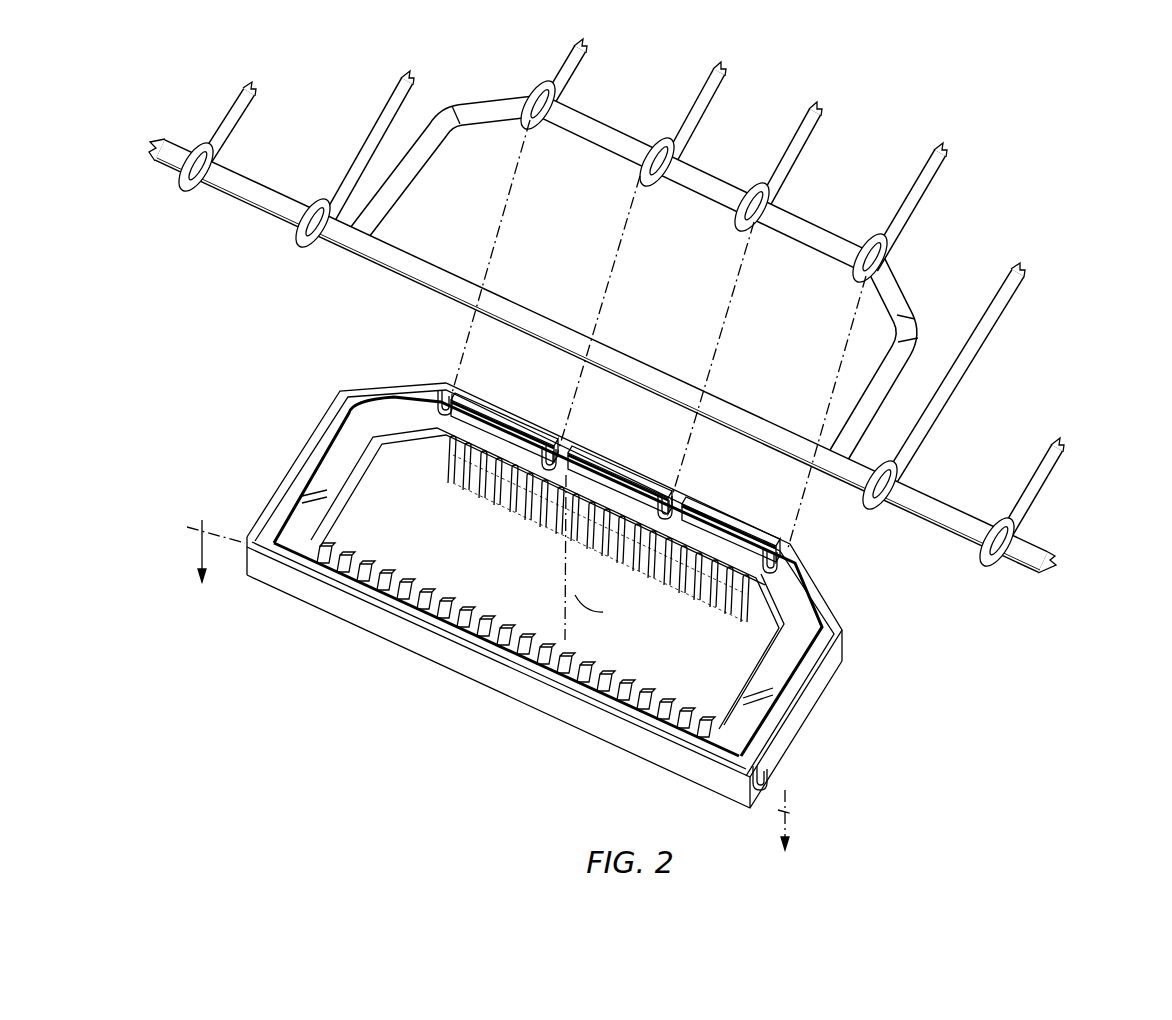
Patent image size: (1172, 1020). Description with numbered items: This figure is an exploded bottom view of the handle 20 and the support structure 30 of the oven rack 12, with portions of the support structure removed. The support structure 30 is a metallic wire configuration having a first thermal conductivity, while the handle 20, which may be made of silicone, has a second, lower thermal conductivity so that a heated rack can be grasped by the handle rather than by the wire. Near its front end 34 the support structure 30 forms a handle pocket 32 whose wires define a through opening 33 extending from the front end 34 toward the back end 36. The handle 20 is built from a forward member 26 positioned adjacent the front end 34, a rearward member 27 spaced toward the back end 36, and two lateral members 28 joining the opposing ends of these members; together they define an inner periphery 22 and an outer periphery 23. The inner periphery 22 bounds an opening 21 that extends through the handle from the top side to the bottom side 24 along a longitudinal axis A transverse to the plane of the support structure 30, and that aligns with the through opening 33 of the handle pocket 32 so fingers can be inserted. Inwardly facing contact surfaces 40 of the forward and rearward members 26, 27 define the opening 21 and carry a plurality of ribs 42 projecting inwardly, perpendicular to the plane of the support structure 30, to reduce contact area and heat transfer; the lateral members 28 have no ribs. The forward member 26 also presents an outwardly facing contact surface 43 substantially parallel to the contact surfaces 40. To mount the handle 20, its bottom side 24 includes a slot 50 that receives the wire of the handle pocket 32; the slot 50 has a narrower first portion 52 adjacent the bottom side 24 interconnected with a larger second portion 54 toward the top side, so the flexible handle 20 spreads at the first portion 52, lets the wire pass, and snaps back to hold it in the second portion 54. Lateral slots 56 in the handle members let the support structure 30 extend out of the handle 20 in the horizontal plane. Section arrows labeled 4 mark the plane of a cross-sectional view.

The oven rack 12 is at (656, 458).
The handle 20 is at (574, 623).
The opening 21 is at (463, 640).
The inner periphery 22 is at (385, 588).
The outer periphery 23 is at (270, 486).
The bottom side 24 is at (820, 605).
The forward member 26 is at (613, 735).
The rearward member 27 is at (712, 537).
The lateral members 28 is at (314, 438).
The support structure 30 is at (653, 322).
The handle pocket 32 is at (920, 290).
The through opening 33 is at (766, 385).
The front end 34 is at (240, 235).
The back end 36 is at (1020, 128).
The contact surfaces 40 is at (408, 571).
The ribs 42 is at (427, 590).
The outwardly facing contact surface 43 is at (370, 640).
The slot 50 is at (806, 572).
The first portion 52 is at (515, 442).
The second portion 54 is at (568, 452).
The lateral slots 56 is at (677, 493).
The section line 4 is at (490, 698).